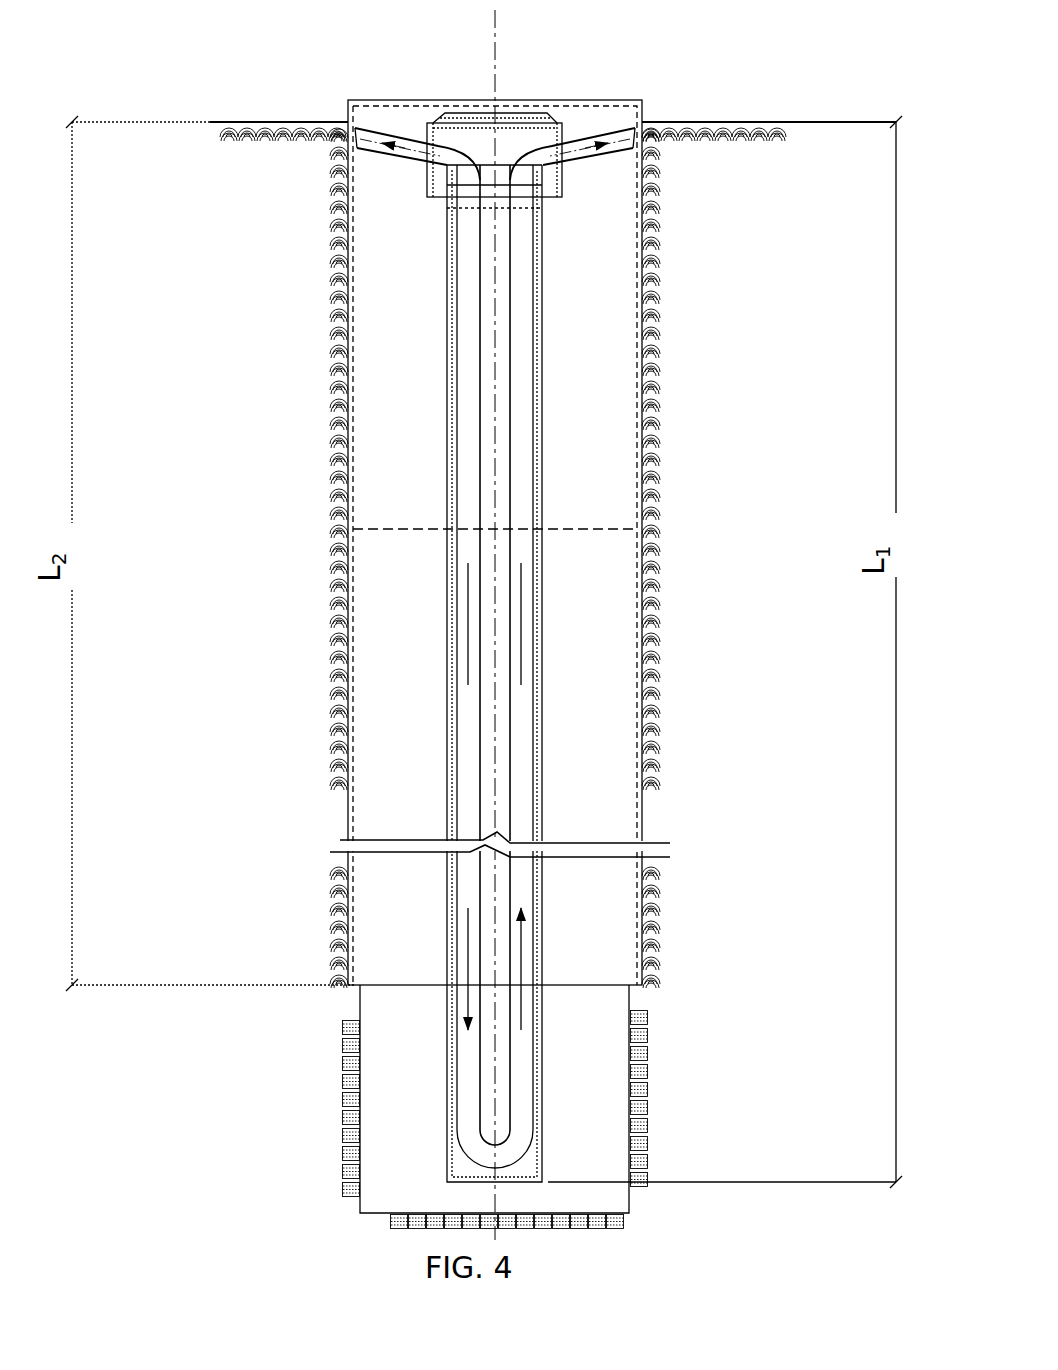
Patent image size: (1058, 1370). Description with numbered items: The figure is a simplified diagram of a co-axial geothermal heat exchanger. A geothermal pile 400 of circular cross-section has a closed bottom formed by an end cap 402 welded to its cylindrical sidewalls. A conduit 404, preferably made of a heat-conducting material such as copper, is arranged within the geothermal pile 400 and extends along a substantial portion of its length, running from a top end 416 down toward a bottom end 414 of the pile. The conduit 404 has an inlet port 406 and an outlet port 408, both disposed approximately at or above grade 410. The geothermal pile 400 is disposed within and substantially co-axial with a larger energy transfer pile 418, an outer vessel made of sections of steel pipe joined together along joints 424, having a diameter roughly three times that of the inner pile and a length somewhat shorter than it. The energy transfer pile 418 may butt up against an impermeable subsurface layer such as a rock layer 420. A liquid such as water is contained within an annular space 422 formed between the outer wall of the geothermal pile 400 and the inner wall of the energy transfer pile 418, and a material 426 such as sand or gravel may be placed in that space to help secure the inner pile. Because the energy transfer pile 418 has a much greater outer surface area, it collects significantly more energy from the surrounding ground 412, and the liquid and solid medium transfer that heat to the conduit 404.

The geothermal pile 400 is at (545, 685).
The end cap 402 is at (478, 1172).
The conduit 404 is at (516, 455).
The inlet port 406 is at (388, 160).
The outlet port 408 is at (617, 160).
The grade 410 is at (690, 120).
The surrounding ground 412 is at (650, 397).
The bottom end of the pile 414 is at (410, 1095).
The top end of the pile 416 is at (316, 201).
The energy transfer pile 418 is at (343, 458).
The rock layer 420 is at (350, 1137).
The annular space 422 is at (562, 590).
The joints 424 is at (482, 112).
The material 426 is at (575, 1093).